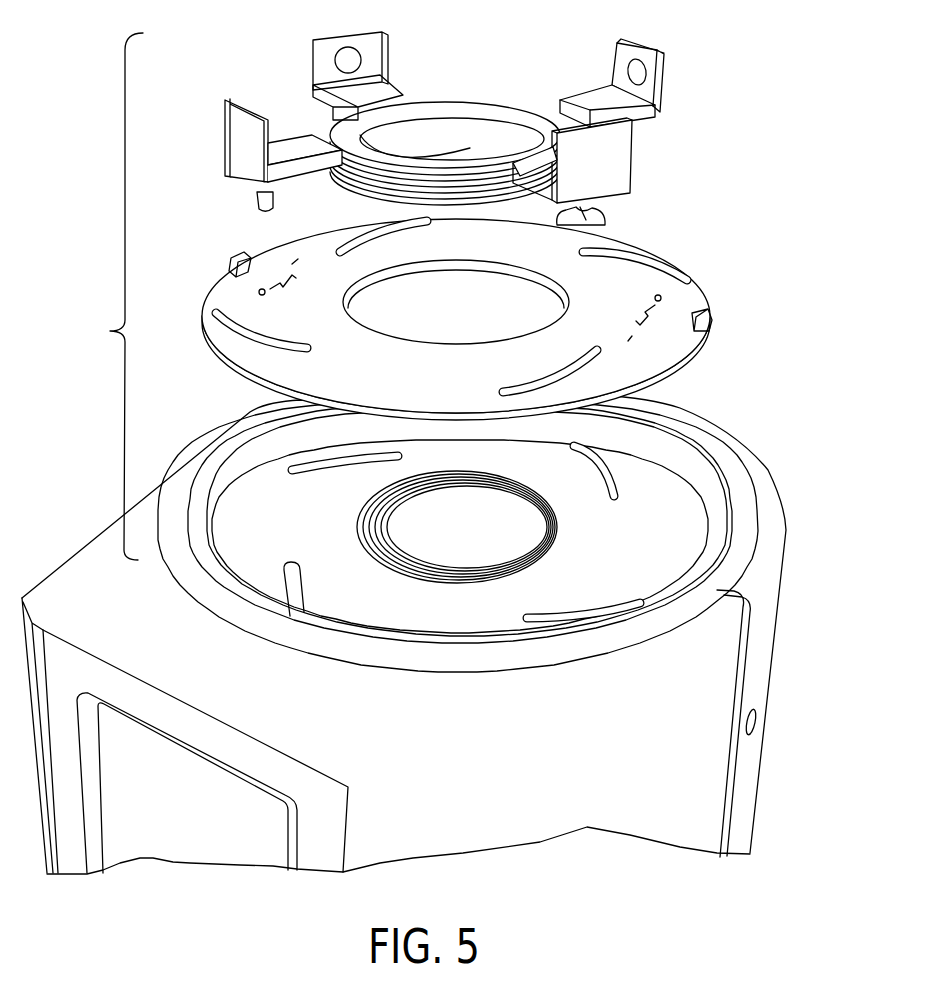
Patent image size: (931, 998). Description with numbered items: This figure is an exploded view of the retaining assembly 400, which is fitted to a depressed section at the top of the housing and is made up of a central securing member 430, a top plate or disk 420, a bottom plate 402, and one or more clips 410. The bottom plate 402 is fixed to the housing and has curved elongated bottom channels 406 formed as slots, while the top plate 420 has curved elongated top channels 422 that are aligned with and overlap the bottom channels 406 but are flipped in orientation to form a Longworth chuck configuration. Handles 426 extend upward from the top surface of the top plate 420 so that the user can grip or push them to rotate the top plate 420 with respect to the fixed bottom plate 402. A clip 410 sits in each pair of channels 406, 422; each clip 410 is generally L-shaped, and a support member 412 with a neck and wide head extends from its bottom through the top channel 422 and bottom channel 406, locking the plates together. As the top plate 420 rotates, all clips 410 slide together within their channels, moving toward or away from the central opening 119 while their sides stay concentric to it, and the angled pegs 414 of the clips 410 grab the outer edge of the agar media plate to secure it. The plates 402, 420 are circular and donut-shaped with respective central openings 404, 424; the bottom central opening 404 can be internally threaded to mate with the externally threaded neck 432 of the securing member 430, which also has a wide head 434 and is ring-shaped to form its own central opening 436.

The retaining assembly 400 is at (110, 331).
The bottom plate 402 is at (668, 519).
The bottom central opening 404 is at (503, 489).
The bottom channels 406 is at (313, 472).
The clip 410 is at (662, 101).
The support member 412 is at (610, 222).
The pegs 414 is at (640, 72).
The central opening 119 is at (512, 132).
The top plate 420 is at (712, 322).
The top channels 422 is at (223, 298).
The top central opening 424 is at (417, 322).
The handles 426 is at (707, 301).
The securing member 430 is at (425, 101).
The neck 432 is at (357, 182).
The wide head 434 is at (333, 130).
The central opening 436 is at (470, 145).